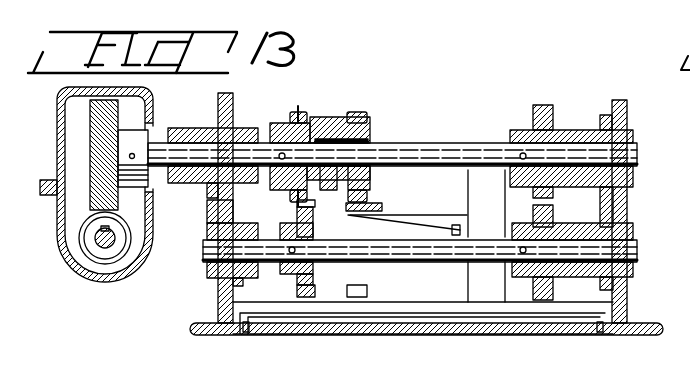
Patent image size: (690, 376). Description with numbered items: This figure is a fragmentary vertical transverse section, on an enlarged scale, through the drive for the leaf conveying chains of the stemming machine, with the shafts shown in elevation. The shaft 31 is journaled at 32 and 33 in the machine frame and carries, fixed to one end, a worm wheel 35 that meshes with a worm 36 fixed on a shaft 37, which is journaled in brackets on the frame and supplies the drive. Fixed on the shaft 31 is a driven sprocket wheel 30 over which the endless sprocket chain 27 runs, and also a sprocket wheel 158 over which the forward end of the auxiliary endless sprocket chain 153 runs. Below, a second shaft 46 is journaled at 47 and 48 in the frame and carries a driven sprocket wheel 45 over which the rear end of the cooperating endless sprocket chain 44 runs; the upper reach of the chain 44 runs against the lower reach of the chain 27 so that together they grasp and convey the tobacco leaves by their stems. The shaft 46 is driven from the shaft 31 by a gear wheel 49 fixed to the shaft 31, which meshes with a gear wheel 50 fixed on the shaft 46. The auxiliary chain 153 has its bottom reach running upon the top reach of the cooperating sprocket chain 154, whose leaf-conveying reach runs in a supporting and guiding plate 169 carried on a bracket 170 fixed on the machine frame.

The endless sprocket chain 27 is at (294, 114).
The driven sprocket wheel 30 is at (291, 125).
The shaft 31 is at (448, 143).
The journal 32 is at (626, 130).
The journal 33 is at (242, 128).
The worm wheel 35 is at (90, 128).
The worm 36 is at (84, 240).
The shaft 37 is at (104, 248).
The endless sprocket chain 44 is at (313, 214).
The driven sprocket wheel 45 is at (290, 277).
The shaft 46 is at (420, 262).
The journal 47 is at (212, 270).
The journal 48 is at (633, 243).
The gear wheel 49 is at (536, 113).
The gear wheel 50 is at (533, 282).
The endless sprocket chain 153 is at (362, 114).
The endless sprocket chain 154 is at (368, 207).
The sprocket wheel 158 is at (370, 122).
The supporting and guiding plate 169 is at (356, 216).
The bracket 170 is at (437, 213).